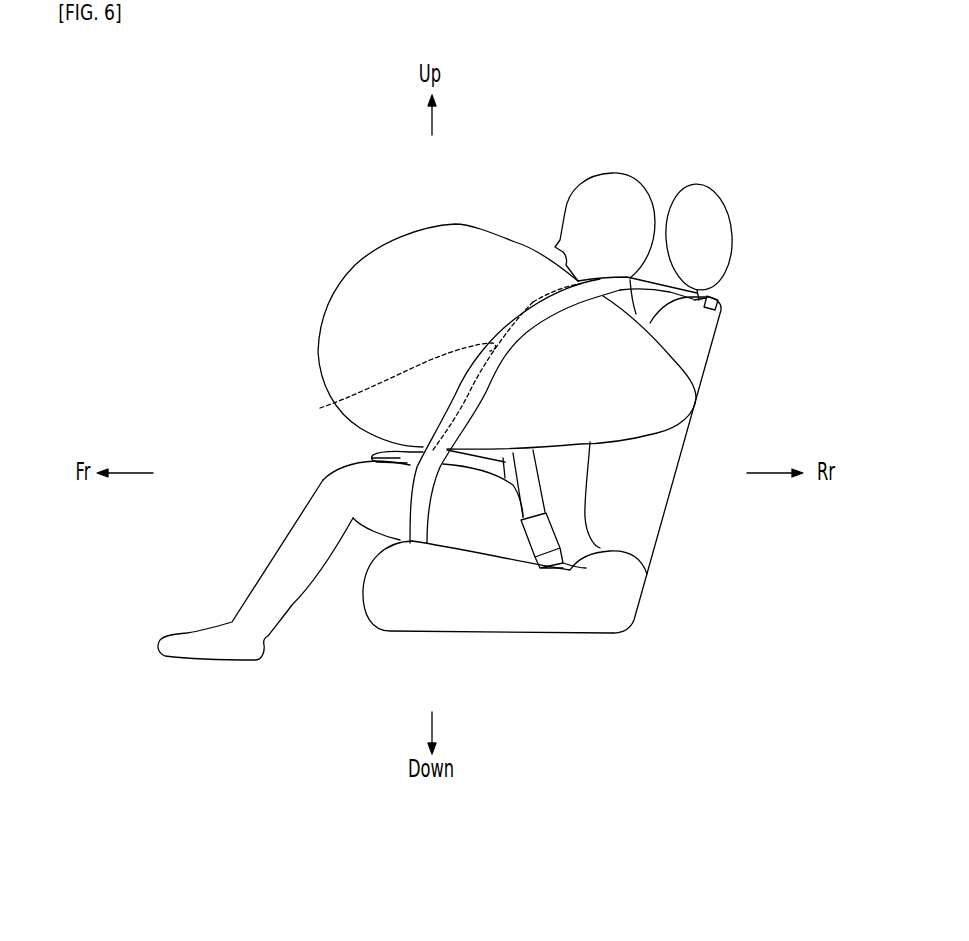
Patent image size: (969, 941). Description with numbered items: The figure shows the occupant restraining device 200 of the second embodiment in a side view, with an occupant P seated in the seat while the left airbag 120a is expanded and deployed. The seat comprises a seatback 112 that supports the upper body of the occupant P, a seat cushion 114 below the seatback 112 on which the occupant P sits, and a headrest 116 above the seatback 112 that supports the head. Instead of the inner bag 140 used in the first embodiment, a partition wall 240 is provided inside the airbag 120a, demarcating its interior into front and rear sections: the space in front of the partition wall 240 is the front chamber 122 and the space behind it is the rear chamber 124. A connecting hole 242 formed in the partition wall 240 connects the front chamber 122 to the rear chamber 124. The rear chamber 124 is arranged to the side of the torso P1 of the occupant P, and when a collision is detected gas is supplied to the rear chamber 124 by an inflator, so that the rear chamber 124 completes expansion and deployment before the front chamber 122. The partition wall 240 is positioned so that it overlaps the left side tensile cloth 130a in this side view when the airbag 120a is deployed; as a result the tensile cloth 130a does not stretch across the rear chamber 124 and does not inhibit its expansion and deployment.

The occupant restraining device 200 is at (716, 120).
The seatback 112 is at (663, 480).
The seat cushion 114 is at (542, 622).
The headrest 116 is at (690, 228).
The left airbag 120a is at (405, 258).
The front chamber 122 is at (434, 331).
The rear chamber 124 is at (558, 393).
The left side tensile cloth 130a is at (411, 497).
The inner bag 140 is at (689, 391).
The partition wall 240 is at (533, 302).
The connecting hole 242 is at (389, 383).
The occupant P is at (584, 161).
The torso P1 is at (567, 483).